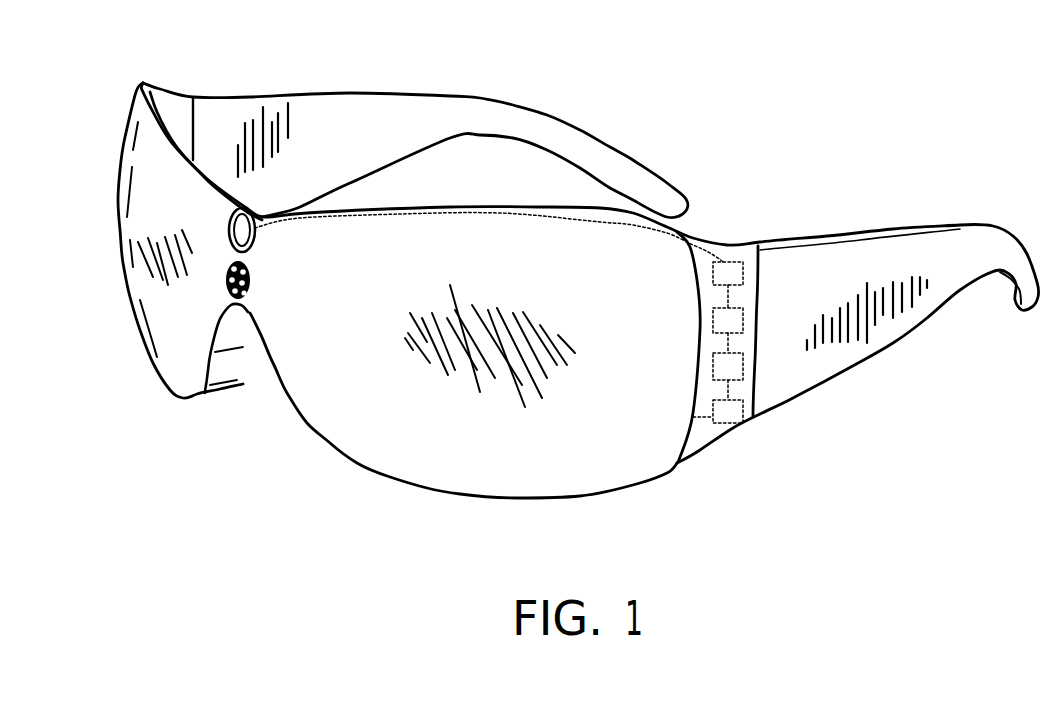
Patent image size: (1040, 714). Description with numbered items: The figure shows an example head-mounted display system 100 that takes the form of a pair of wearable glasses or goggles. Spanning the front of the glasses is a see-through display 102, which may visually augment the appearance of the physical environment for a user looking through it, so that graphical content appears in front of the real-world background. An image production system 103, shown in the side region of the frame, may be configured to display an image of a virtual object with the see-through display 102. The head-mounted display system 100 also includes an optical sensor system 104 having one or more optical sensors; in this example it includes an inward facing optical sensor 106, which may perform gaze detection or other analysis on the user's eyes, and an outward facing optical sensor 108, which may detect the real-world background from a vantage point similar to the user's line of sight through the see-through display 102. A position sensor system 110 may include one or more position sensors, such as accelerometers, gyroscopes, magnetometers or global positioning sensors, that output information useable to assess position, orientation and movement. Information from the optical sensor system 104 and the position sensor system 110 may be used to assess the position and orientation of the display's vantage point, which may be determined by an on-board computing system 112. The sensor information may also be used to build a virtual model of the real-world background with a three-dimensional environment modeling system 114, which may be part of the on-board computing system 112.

The head-mounted display system 100 is at (660, 75).
The see-through display 102 is at (438, 395).
The image production system 103 is at (733, 412).
The optical sensor system 104 is at (285, 183).
The inward facing optical sensor 106 is at (255, 222).
The outward facing optical sensor 108 is at (243, 303).
The position sensor system 110 is at (733, 317).
The on-board computing system 112 is at (733, 273).
The 3D environment modeling system 114 is at (737, 365).